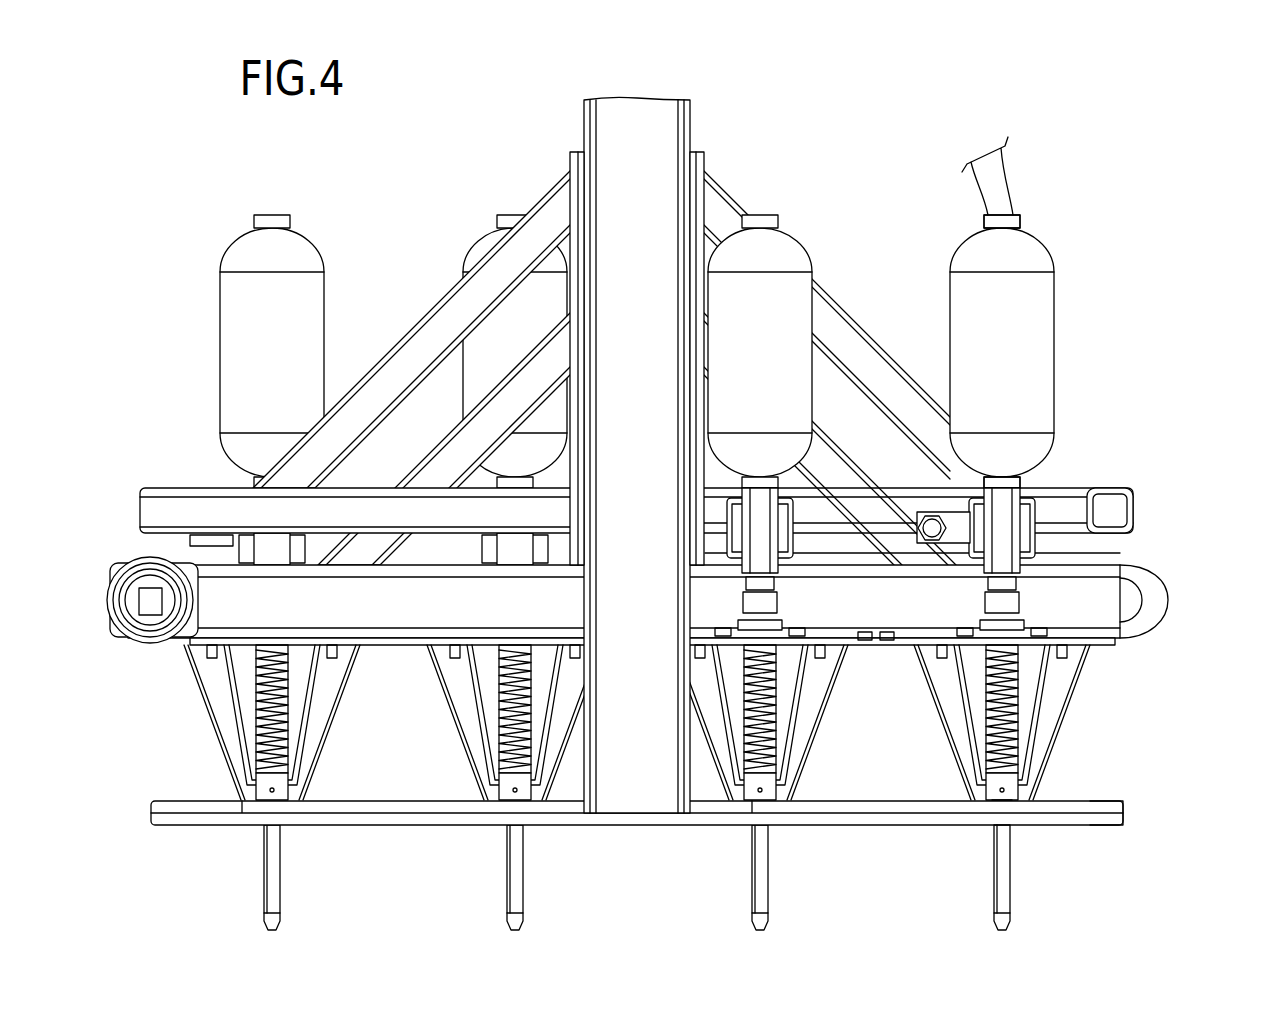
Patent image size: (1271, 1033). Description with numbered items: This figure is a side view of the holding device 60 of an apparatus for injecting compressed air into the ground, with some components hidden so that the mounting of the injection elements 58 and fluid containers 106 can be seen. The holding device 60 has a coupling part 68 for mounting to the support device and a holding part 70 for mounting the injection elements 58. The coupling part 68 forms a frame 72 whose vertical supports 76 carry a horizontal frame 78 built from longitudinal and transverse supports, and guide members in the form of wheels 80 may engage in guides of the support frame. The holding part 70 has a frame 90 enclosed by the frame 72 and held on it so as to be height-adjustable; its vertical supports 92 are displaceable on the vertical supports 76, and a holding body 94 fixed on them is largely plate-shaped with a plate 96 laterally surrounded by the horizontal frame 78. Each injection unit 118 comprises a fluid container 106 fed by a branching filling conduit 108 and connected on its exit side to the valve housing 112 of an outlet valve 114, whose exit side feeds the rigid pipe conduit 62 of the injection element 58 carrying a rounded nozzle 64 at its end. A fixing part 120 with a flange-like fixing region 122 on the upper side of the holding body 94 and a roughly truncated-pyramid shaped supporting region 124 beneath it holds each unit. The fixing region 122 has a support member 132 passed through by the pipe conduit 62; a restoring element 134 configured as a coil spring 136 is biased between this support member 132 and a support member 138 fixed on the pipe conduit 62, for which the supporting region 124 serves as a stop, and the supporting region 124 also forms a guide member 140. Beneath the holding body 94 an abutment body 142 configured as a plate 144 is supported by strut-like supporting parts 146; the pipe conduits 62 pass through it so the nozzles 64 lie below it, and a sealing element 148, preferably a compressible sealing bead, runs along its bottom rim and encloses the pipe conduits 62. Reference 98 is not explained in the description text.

The injection element 58 is at (976, 906).
The holding device 60 is at (490, 200).
The pipe conduit 62 is at (1006, 890).
The nozzle 64 is at (1010, 926).
The coupling part 68 is at (660, 199).
The holding part 70 is at (864, 570).
The frame 72 is at (416, 346).
The vertical supports 76 is at (664, 243).
The horizontal frame 78 is at (206, 515).
The wheels 80 is at (154, 626).
The frame 90 is at (822, 438).
The vertical supports 92 is at (637, 722).
The holding body 94 is at (887, 642).
The plate 96 is at (866, 645).
The lower beam end lug 98 is at (1110, 577).
The fluid container 106 is at (1032, 338).
The filling conduit 108 is at (1000, 168).
The valve housing 112 is at (1004, 526).
The outlet valve 114 is at (969, 519).
The injection unit 118 is at (1072, 294).
The fixing part 120 is at (1060, 616).
The fixing region 122 is at (1062, 644).
The supporting region 124 is at (1044, 706).
The support member 132 is at (1000, 600).
The restoring element 134 is at (1014, 740).
The coil spring 136 is at (1020, 680).
The support member 138 is at (1014, 776).
The guide member 140 is at (1006, 802).
The abutment body 142 is at (930, 806).
The plate 144 is at (846, 814).
The supporting parts 146 is at (956, 745).
The sealing element 148 is at (1090, 816).